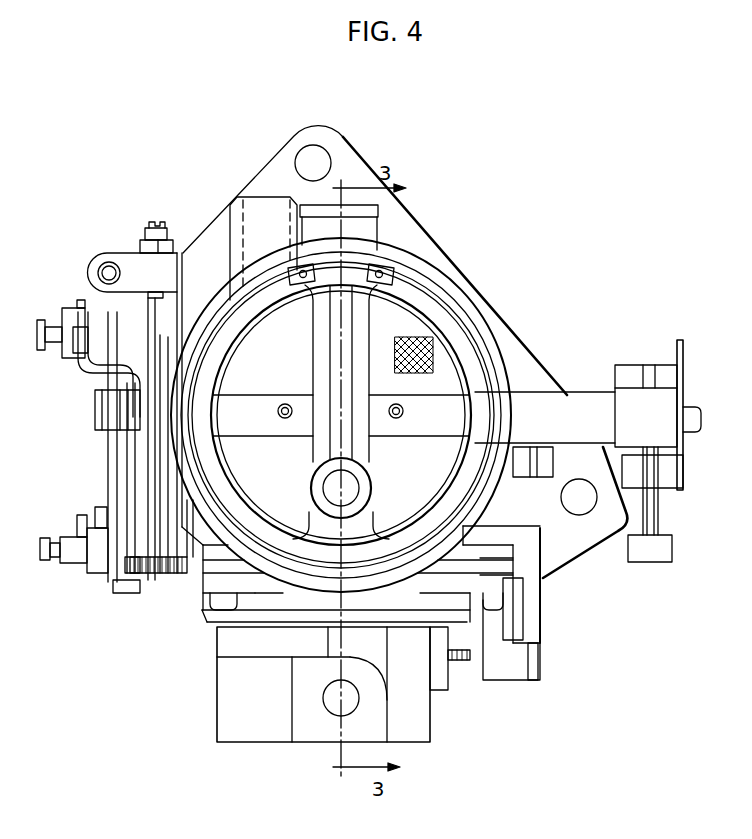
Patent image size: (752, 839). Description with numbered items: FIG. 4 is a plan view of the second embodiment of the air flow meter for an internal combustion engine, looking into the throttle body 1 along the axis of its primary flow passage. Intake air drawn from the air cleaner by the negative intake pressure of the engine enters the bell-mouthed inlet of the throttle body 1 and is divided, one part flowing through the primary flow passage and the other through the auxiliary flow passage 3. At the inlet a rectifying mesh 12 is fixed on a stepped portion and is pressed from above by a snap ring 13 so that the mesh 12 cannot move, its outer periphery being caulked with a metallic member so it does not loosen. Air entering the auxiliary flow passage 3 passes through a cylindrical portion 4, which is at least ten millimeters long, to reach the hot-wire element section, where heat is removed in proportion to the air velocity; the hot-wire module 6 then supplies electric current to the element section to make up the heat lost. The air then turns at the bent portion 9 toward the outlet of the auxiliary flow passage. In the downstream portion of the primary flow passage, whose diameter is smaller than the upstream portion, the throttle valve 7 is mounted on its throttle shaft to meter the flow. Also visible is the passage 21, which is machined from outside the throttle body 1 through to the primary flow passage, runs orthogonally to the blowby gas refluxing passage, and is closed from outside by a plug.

The throttle body 1 is at (500, 497).
The auxiliary flow passage 3 is at (345, 486).
The cylindrical portion 4 is at (362, 488).
The hot-wire module 6 is at (415, 705).
The throttle valve 7 is at (268, 490).
The bent portion 9 is at (460, 353).
The rectifying mesh 12 is at (410, 334).
The snap ring 13 is at (263, 290).
The passage 21 is at (262, 218).